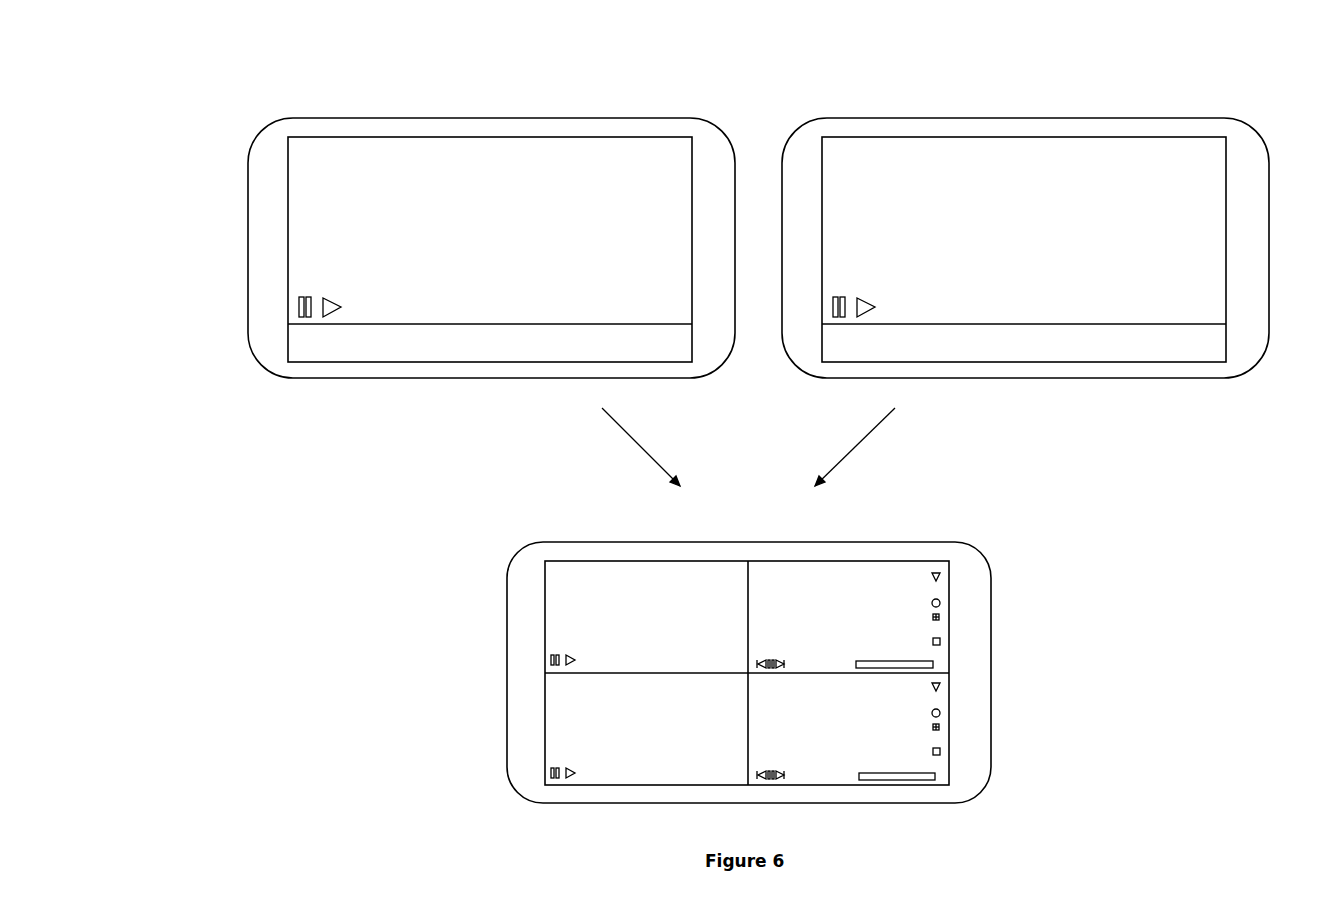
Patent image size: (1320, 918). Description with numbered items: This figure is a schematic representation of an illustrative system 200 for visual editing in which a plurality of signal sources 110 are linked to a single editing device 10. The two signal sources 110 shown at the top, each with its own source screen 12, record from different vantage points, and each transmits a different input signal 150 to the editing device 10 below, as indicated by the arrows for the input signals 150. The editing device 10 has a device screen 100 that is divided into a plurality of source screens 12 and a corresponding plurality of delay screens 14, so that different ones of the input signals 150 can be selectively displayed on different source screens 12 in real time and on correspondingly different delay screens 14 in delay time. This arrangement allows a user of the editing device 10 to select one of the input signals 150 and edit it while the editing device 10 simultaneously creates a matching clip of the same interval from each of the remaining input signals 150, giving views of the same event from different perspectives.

The system for visual editing of an input signal 200 is at (889, 70).
The signal source 110 is at (675, 117).
The source screen 12 is at (525, 152).
The input signal 150 is at (748, 447).
The editing device 10 is at (915, 541).
The device screen 100 is at (645, 787).
The delay screen 14 is at (935, 588).